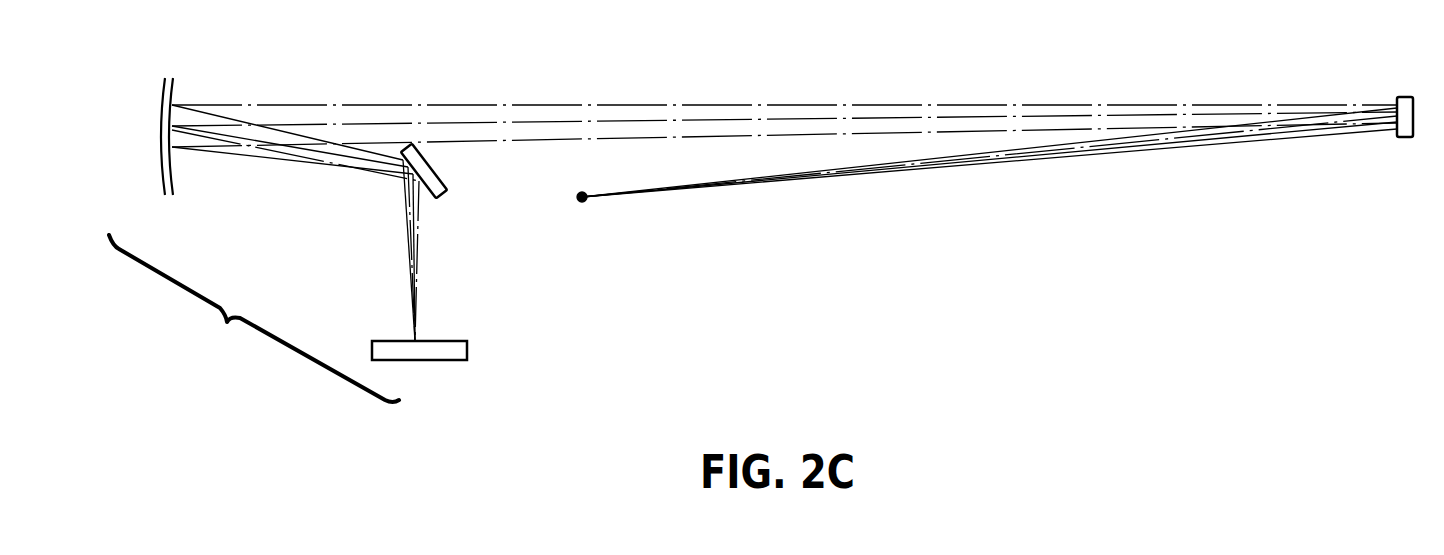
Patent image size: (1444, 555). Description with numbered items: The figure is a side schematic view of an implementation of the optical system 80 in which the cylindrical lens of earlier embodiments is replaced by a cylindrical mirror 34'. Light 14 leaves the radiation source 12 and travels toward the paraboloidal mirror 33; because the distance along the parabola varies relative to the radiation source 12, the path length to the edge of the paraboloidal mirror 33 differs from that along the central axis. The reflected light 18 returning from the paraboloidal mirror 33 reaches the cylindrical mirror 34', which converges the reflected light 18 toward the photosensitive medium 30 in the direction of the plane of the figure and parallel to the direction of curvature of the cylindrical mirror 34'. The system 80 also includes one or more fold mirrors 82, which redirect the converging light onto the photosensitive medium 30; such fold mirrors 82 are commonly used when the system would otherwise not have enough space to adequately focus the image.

The cylindrical mirror 34' is at (208, 119).
The reflected light 18 is at (531, 104).
The paraboloidal mirror 33 is at (1413, 105).
The radiation source 12 is at (582, 202).
The light 14 is at (729, 190).
The fold mirrors 82 is at (446, 185).
The photosensitive medium 30 is at (467, 350).
The system 80 is at (254, 318).